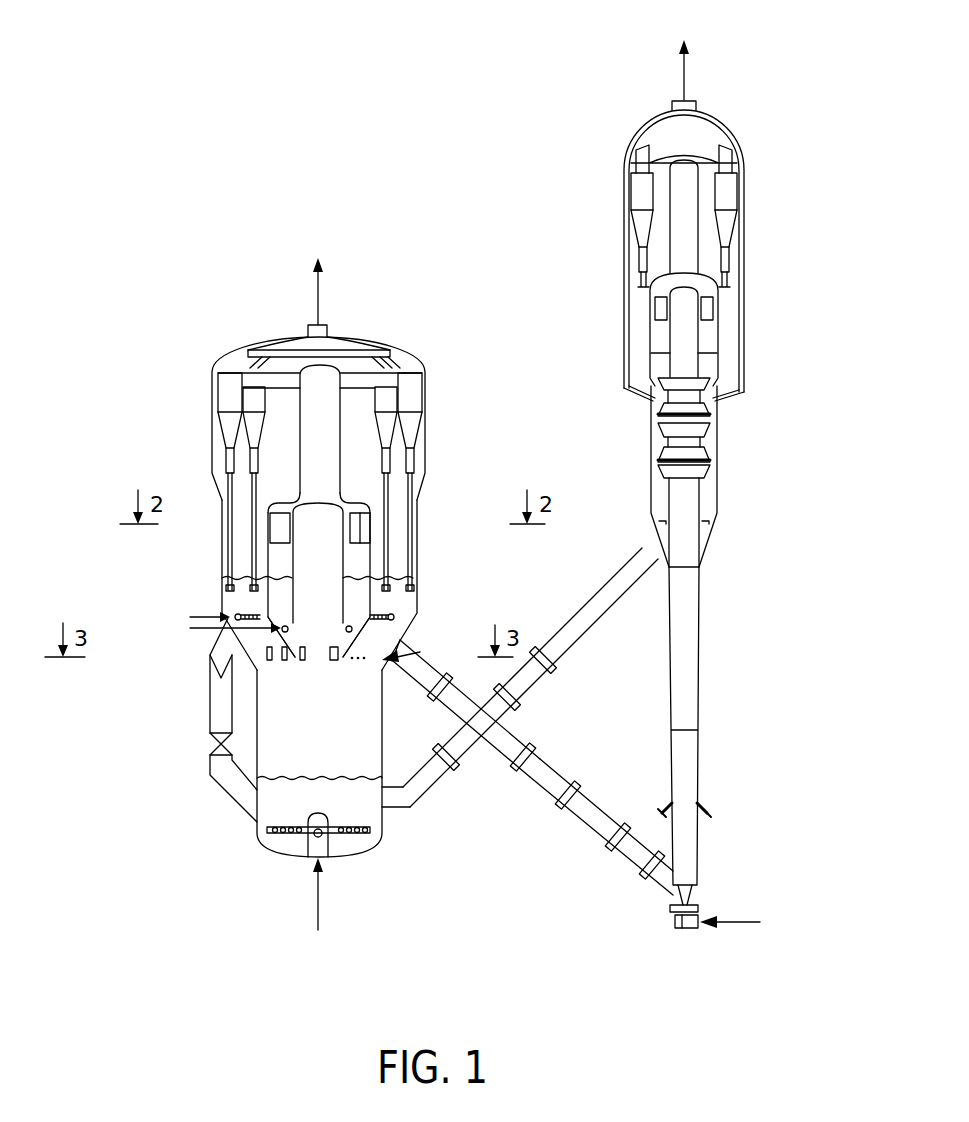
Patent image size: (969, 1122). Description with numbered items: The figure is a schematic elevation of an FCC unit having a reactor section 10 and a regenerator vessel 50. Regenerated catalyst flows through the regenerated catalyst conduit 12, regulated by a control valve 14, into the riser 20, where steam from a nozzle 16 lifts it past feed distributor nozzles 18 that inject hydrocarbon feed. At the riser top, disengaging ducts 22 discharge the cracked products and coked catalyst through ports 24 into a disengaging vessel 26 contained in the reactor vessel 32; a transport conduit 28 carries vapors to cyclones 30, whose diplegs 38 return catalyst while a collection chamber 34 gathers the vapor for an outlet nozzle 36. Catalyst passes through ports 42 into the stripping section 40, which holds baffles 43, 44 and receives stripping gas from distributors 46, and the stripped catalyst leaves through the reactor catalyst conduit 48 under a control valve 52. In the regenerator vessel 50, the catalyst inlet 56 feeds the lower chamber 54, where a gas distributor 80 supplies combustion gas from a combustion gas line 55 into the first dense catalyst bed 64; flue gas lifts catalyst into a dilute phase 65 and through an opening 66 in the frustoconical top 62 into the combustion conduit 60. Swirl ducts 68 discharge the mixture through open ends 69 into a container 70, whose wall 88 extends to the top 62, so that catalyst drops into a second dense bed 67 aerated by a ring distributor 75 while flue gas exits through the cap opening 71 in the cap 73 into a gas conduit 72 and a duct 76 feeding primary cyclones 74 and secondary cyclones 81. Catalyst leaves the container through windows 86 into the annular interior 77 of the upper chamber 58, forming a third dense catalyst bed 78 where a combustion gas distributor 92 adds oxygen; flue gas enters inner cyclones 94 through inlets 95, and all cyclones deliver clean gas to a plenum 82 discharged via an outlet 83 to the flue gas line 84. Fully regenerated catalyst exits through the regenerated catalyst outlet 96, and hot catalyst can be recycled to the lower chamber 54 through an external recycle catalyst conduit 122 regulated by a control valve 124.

The reactor section 10 is at (752, 62).
The regenerated catalyst conduit 12 is at (560, 828).
The control valve 14 is at (640, 878).
The nozzle 16 is at (686, 932).
The feed distributor nozzles 18 is at (665, 805).
The riser 20 is at (702, 697).
The disengaging ducts 22 is at (705, 325).
The ports 24 is at (710, 307).
The disengaging vessel 26 is at (730, 384).
The transport conduit 28 is at (688, 245).
The cyclones 30 is at (640, 190).
The reactor vessel 32 is at (734, 290).
The collection chamber 34 is at (718, 128).
The outlet nozzle 36 is at (672, 100).
The diplegs 38 is at (724, 328).
The stripping section 40 is at (710, 452).
The ports 42 is at (712, 382).
The baffles 43 is at (697, 432).
The baffles 44 is at (712, 380).
The distributors 46 is at (710, 540).
The reactor catalyst conduit 48 is at (629, 590).
The regenerator vessel 50 is at (178, 205).
The control valve 52 is at (415, 790).
The lower chamber 54 is at (270, 707).
The combustion gas line 55 is at (318, 915).
The catalyst inlet 56 is at (395, 787).
The upper chamber 58 is at (398, 505).
The combustion conduit 60 is at (273, 592).
The top 62 is at (280, 632).
The first dense catalyst bed 64 is at (360, 805).
The dilute phase 65 is at (333, 704).
The opening 66 is at (318, 633).
The second dense bed 67 is at (372, 600).
The swirl ducts 68 is at (232, 533).
The open ends 69 is at (365, 540).
The container 70 is at (222, 563).
The cap opening 71 is at (316, 487).
The gas conduit 72 is at (322, 440).
The cap 73 is at (342, 497).
The primary cyclones 74 is at (228, 405).
The distributor 75 is at (412, 662).
The duct 76 is at (247, 378).
The annular interior 77 is at (245, 512).
The third dense catalyst bed 78 is at (385, 612).
The gas distributor 80 is at (325, 838).
The secondary cyclones 81 is at (383, 388).
The plenum 82 is at (385, 352).
The outlet 83 is at (310, 330).
The flue gas line 84 is at (324, 324).
The window 86 is at (340, 661).
The wall 88 is at (368, 555).
The combustion gas distributor 92 is at (236, 612).
The inner cyclones 94 is at (412, 400).
The inlets 95 is at (363, 355).
The regenerated catalyst outlet 96 is at (414, 658).
The external recycle catalyst conduit 122 is at (242, 812).
The control valve 124 is at (212, 745).